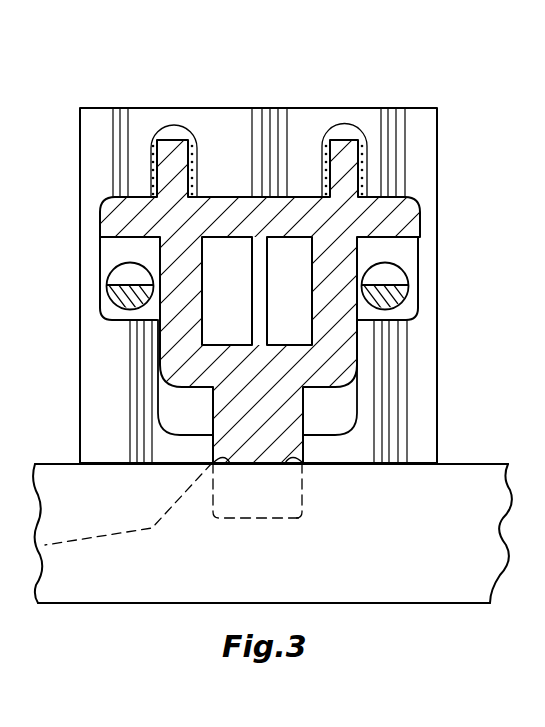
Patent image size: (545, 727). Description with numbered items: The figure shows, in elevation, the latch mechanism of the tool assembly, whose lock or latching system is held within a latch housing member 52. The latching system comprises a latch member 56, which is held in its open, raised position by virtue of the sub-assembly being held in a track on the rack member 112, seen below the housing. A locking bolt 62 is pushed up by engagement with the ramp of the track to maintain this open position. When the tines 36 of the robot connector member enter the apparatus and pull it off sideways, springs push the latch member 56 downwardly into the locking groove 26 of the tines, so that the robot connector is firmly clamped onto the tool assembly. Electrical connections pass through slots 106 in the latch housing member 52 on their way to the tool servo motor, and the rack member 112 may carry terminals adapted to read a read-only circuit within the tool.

The latch housing member 52 is at (363, 108).
The slots 106 is at (249, 265).
The tines 36 is at (106, 298).
The locking groove 26 is at (392, 274).
The latch member 56 is at (330, 392).
The locking bolt 62 is at (262, 442).
The rack member 112 is at (458, 483).